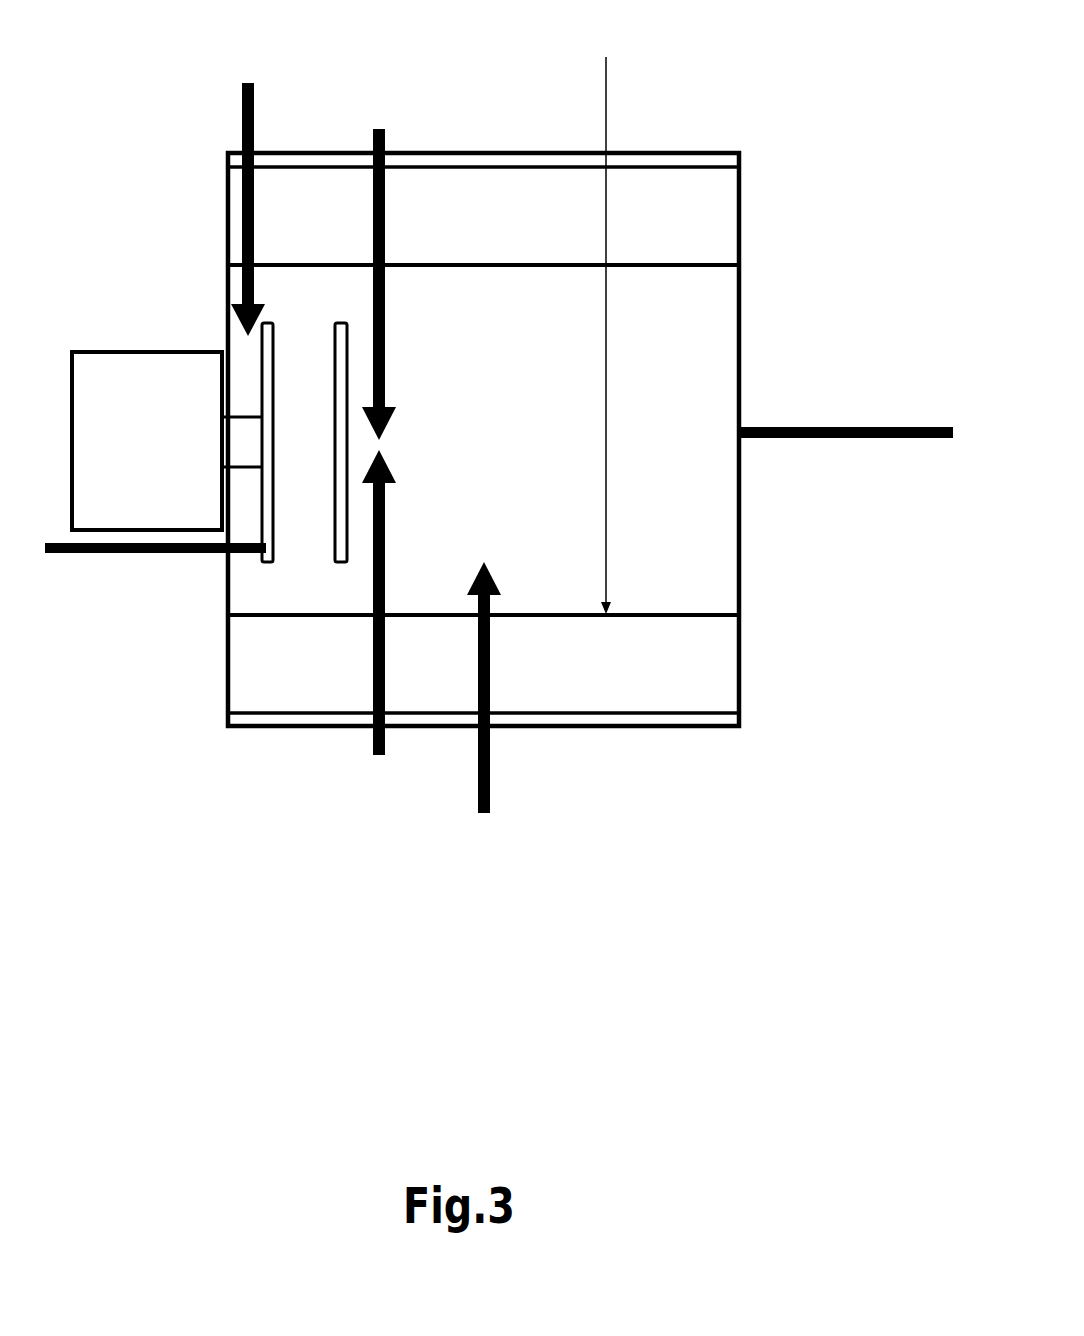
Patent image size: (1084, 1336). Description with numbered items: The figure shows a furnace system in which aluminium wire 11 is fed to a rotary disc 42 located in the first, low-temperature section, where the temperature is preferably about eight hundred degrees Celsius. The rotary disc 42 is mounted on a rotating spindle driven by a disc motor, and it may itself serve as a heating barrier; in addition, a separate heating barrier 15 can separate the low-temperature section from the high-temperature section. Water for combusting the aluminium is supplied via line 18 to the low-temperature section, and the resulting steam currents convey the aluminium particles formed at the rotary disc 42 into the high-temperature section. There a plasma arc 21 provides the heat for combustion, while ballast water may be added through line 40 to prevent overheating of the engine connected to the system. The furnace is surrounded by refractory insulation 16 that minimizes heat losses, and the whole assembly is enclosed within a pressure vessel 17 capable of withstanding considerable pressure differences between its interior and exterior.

The aluminium wire 11 is at (147, 566).
The heating barrier 15 is at (335, 579).
The insulation 16 is at (548, 212).
The pressure vessel 17 is at (587, 729).
The water line 18 is at (251, 191).
The plasma arc 21 is at (385, 455).
The ballast water line 40 is at (480, 717).
The rotary disc 42 is at (265, 564).